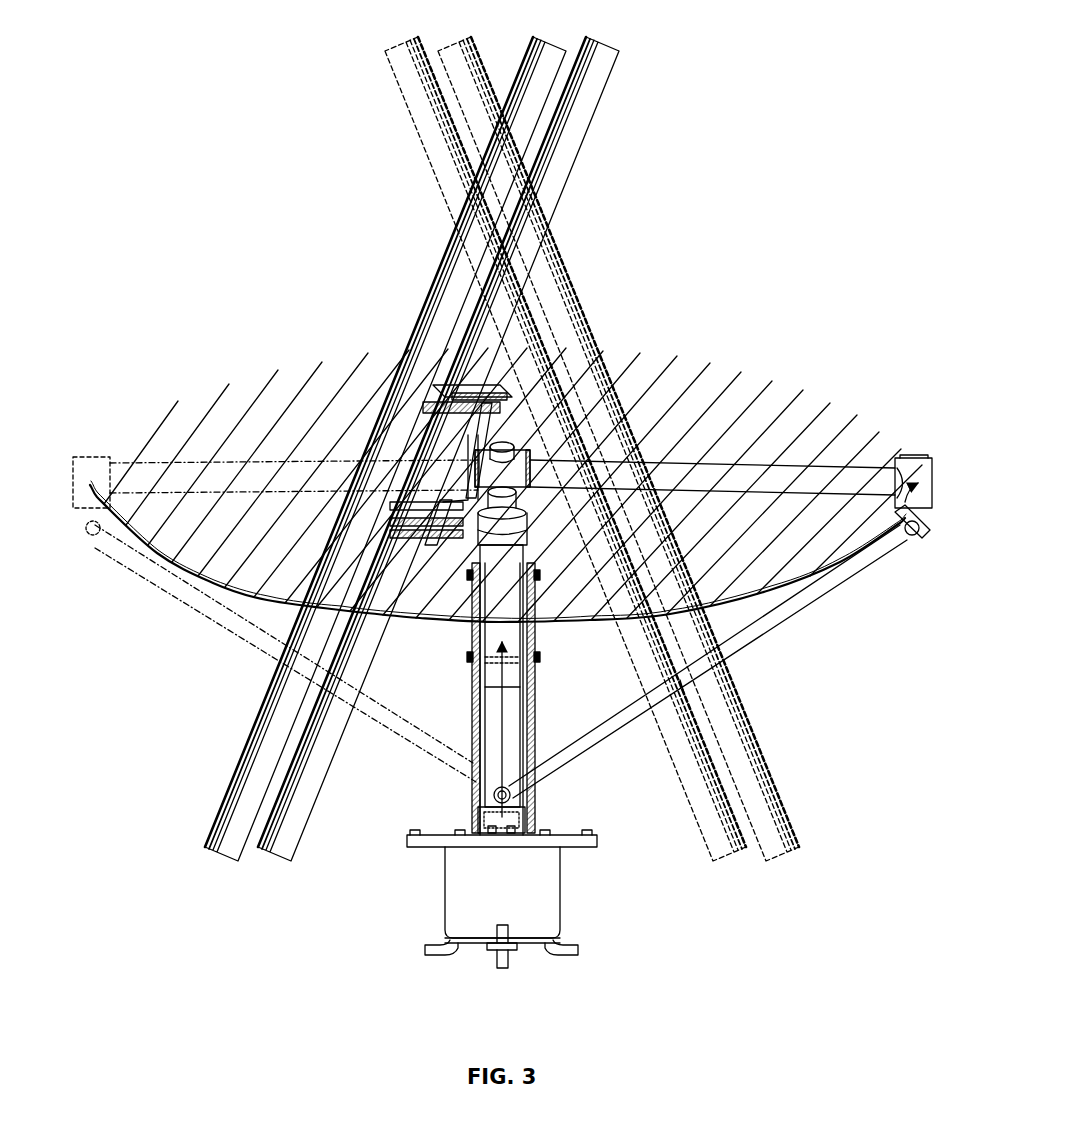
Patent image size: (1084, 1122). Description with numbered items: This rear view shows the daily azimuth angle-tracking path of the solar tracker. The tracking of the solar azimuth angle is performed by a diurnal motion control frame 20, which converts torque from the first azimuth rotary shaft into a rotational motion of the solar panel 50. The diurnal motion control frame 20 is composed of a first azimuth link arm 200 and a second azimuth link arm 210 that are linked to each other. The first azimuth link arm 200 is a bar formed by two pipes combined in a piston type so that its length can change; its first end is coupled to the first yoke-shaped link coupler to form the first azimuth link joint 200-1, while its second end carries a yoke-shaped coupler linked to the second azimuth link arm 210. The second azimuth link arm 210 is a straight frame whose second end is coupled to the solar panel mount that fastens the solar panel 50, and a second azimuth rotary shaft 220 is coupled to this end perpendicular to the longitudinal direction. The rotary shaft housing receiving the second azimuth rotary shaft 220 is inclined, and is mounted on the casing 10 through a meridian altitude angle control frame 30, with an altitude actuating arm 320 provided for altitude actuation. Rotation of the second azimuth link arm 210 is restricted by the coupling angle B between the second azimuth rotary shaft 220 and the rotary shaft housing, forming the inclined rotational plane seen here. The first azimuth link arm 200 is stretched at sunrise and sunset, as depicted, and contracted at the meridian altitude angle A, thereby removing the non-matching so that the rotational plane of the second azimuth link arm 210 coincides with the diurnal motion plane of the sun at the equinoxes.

The solar panel 50 is at (426, 252).
The coupling angle B is at (236, 408).
The first azimuth link arm 200 is at (817, 595).
The diurnal motion control frame 20 is at (832, 455).
The second azimuth rotary shaft 220 is at (622, 403).
The second azimuth link arm 210 is at (665, 473).
The altitude actuating arm 320 is at (538, 535).
The meridian altitude angle control frame 30 is at (463, 737).
The meridian altitude angle A is at (530, 728).
The first azimuth link joint 200-1 is at (534, 808).
The casing 10 is at (545, 905).